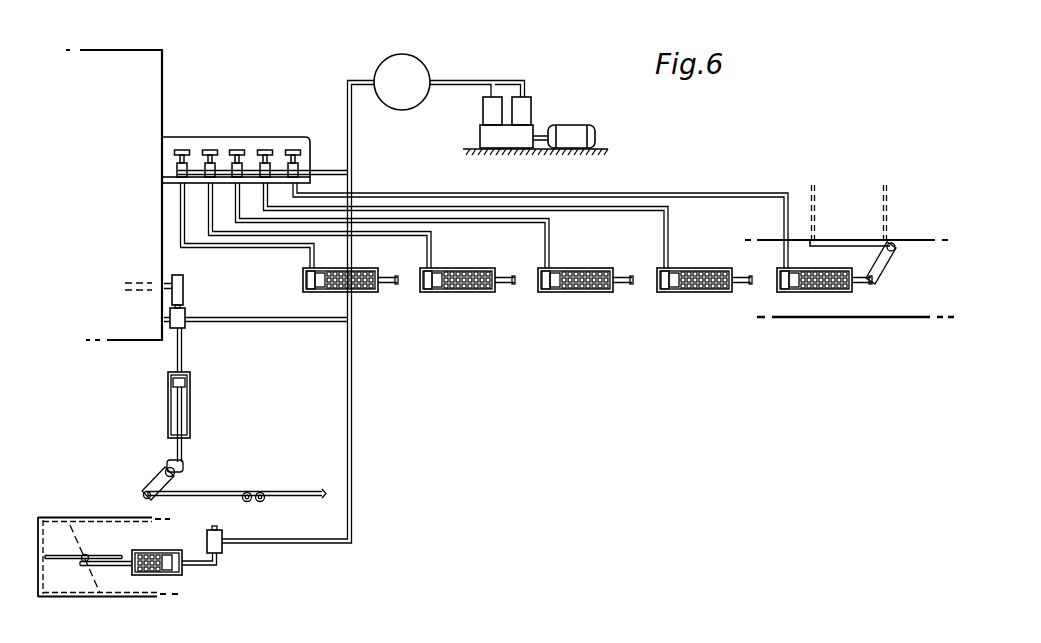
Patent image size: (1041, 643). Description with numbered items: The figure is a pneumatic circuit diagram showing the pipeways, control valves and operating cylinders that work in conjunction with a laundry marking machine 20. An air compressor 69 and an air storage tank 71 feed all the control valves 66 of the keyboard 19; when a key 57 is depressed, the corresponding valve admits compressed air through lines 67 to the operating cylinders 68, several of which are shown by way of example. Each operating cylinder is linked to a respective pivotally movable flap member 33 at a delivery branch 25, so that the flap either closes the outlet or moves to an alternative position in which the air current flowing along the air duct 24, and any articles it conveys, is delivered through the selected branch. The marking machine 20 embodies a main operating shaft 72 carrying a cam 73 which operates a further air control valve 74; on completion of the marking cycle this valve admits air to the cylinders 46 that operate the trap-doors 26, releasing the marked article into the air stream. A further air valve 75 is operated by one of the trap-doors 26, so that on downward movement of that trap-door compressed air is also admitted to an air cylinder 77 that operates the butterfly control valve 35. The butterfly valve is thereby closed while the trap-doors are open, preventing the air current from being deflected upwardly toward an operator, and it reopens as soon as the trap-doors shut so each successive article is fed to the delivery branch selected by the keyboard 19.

The keyboard 19 is at (292, 136).
The laundry marking machine 20 is at (120, 340).
The air duct 24 is at (895, 318).
The delivery branch 25 is at (889, 220).
The trap-doors 26 is at (224, 492).
The flap member 33 is at (855, 238).
The butterfly control valve 35 is at (57, 553).
The cylinders 46 is at (190, 423).
The key 57 is at (297, 150).
The control valves 66 is at (298, 167).
The lines 67 is at (488, 220).
The operating cylinders 68 is at (373, 292).
The air compressor 69 is at (485, 138).
The air storage tank 71 is at (423, 75).
The main operating shaft 72 is at (150, 285).
The cam 73 is at (184, 290).
The air control valve 74 is at (185, 328).
The air valve 75 is at (223, 552).
The air cylinder 77 is at (182, 573).